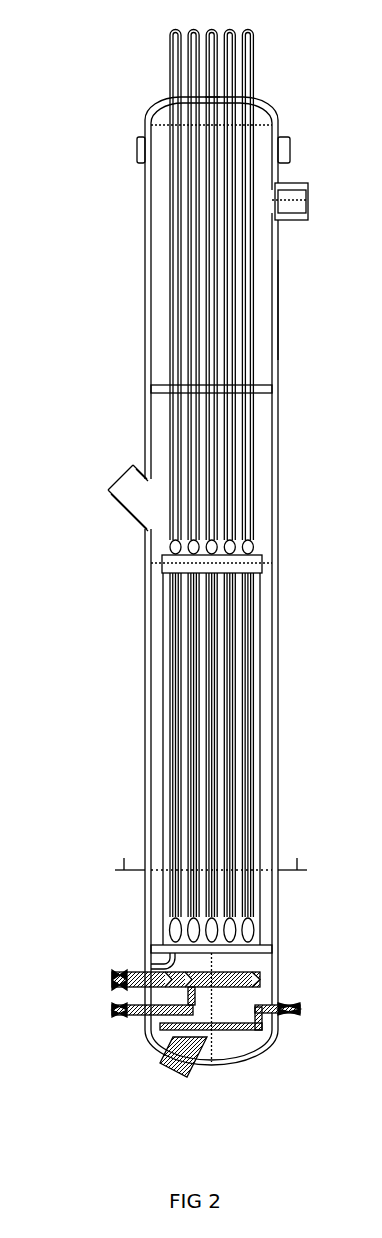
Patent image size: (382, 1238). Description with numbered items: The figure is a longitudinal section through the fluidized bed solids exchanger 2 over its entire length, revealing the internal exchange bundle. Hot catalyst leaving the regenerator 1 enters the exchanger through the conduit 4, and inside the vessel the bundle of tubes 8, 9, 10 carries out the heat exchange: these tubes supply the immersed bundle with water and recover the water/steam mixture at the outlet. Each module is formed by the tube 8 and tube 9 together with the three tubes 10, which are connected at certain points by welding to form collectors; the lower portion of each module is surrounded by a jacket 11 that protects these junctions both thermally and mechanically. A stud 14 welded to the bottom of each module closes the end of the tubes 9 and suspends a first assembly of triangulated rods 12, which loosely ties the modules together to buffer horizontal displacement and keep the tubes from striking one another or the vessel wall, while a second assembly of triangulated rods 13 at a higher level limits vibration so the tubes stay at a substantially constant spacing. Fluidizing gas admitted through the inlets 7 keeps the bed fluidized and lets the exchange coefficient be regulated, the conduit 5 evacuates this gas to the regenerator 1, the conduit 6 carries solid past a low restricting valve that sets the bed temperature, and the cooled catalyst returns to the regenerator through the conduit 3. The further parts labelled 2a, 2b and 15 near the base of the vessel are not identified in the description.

The regenerator 1 is at (211, 858).
The fluidized bed solids exchanger 2 is at (278, 488).
The inlet nozzles 2a is at (110, 1010).
The outlet nozzle 2b is at (300, 1012).
The outlet conduit 3 is at (195, 1072).
The inlet conduit 4 is at (114, 474).
The gas evacuation conduit 5 is at (310, 200).
The conduit 6 is at (250, 315).
The fluidization gas inlets 7 is at (212, 54).
The exchange tube 8 is at (171, 54).
The exchange tube 9 is at (253, 728).
The three tubes 10 is at (258, 690).
The jacket 11 is at (262, 557).
The first assembly of triangulated rods 12 is at (255, 930).
The second assembly of triangulated rods 13 is at (272, 395).
The stud 14 is at (145, 961).
The lower tube plate 15 is at (278, 953).